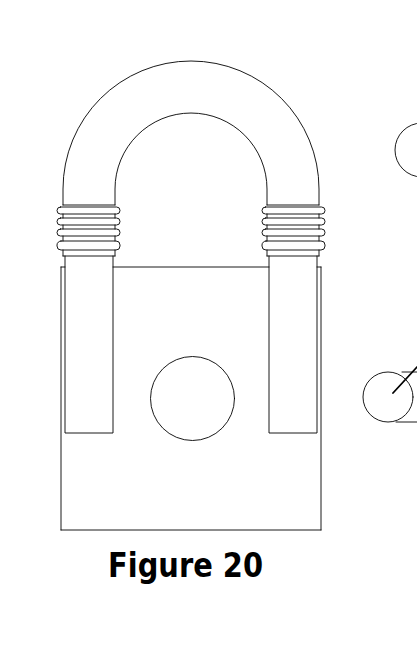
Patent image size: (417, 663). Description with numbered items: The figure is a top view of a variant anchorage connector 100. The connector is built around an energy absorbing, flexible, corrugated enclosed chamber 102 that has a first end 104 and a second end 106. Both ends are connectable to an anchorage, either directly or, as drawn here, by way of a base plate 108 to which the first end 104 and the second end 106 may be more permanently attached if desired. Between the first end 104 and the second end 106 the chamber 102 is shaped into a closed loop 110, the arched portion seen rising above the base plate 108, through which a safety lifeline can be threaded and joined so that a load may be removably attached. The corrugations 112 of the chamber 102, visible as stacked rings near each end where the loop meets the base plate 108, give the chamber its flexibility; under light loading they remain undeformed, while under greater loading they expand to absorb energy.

The anchorage connector 100 is at (337, 108).
The enclosed chamber 102 is at (297, 308).
The first end 104 is at (90, 417).
The second end 106 is at (302, 421).
The base plate 108 is at (305, 508).
The closed loop 110 is at (288, 20).
The corrugations 112 is at (323, 246).